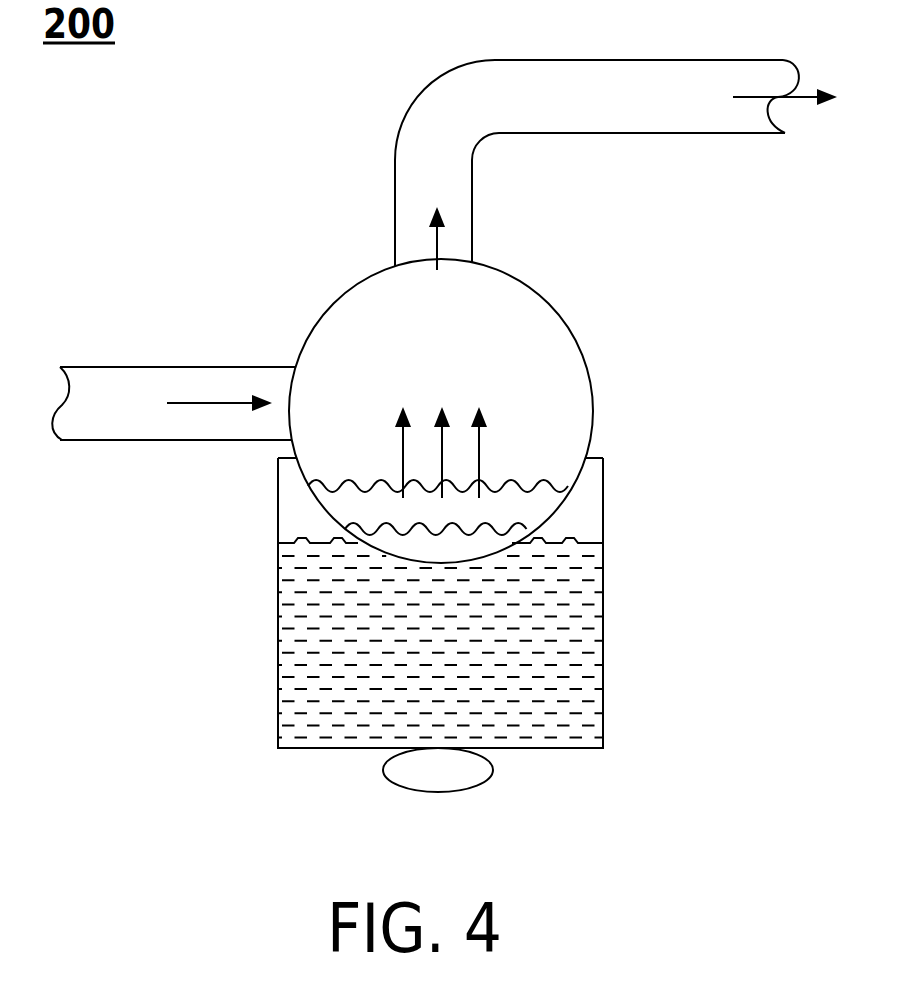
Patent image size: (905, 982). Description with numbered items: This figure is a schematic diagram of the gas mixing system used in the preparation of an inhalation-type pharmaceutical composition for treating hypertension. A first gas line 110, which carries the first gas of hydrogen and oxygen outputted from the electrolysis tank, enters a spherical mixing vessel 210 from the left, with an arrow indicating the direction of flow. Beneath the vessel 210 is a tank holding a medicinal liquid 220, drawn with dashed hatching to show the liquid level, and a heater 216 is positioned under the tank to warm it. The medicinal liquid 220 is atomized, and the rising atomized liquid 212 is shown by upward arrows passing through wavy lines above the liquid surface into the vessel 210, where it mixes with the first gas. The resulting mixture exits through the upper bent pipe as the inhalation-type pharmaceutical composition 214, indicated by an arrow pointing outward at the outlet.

The first gas line 110 is at (120, 387).
The vessel 210 is at (328, 306).
The vapor flow 212 is at (480, 447).
The inhalation-type pharmaceutical composition 214 is at (765, 90).
The heater 216 is at (475, 776).
The medicinal liquid 220 is at (548, 494).